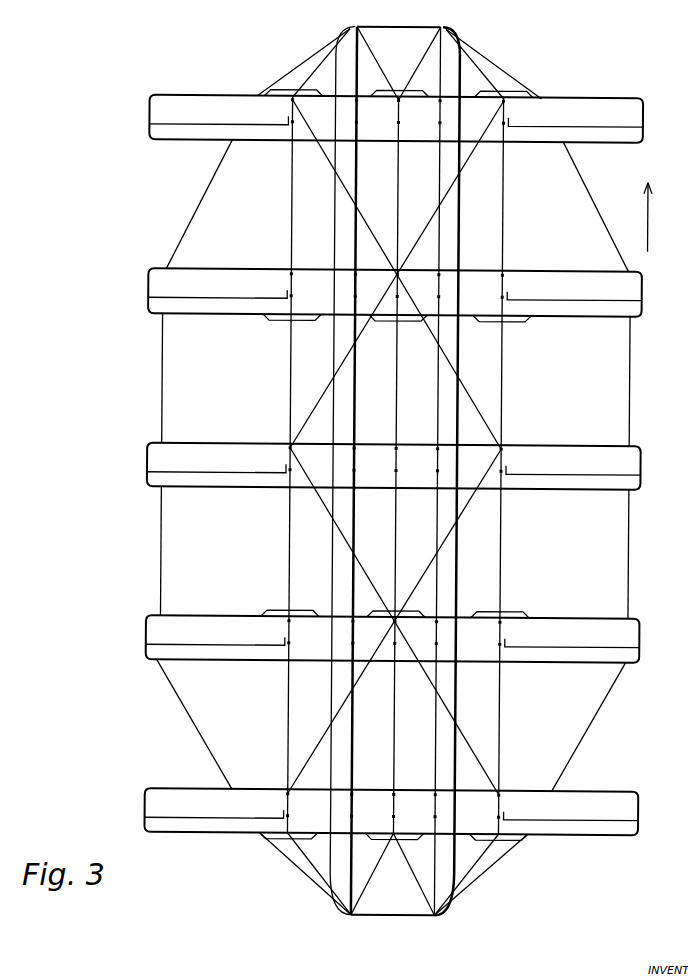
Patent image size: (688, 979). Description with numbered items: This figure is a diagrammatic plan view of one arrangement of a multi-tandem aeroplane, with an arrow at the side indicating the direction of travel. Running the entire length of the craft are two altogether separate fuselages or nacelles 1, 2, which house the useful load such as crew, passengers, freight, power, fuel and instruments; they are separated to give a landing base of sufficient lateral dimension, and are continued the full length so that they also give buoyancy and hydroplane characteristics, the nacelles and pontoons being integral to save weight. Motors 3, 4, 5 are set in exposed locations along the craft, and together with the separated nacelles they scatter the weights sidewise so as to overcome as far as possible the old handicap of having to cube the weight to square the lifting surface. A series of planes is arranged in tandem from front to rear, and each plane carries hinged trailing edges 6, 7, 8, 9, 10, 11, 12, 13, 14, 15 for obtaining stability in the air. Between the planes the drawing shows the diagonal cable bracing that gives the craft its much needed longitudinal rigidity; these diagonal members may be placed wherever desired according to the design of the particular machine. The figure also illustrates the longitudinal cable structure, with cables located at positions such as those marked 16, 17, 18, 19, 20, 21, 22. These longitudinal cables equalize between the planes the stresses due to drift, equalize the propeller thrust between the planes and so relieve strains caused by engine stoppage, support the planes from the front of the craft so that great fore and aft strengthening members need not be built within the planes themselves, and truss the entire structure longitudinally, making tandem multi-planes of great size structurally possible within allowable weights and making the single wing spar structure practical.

The fuselage or nacelle 1 is at (447, 471).
The fuselage or nacelle 2 is at (343, 471).
The motor 3 is at (500, 468).
The motor 4 is at (396, 466).
The motor 5 is at (290, 465).
The hinged trailing edge 6 is at (273, 118).
The hinged trailing edge 7 is at (520, 121).
The hinged trailing edge 8 is at (272, 291).
The hinged trailing edge 9 is at (519, 294).
The hinged trailing edge 10 is at (271, 465).
The hinged trailing edge 11 is at (518, 467).
The hinged trailing edge 12 is at (270, 638).
The hinged trailing edge 13 is at (517, 641).
The hinged trailing edge 14 is at (268, 811).
The hinged trailing edge 15 is at (515, 814).
The longitudinal cable 16 is at (191, 218).
The longitudinal cable 17 is at (289, 213).
The longitudinal cable 18 is at (357, 188).
The longitudinal cable 19 is at (399, 192).
The longitudinal cable 20 is at (437, 177).
The longitudinal cable 21 is at (502, 203).
The longitudinal cable 22 is at (608, 225).